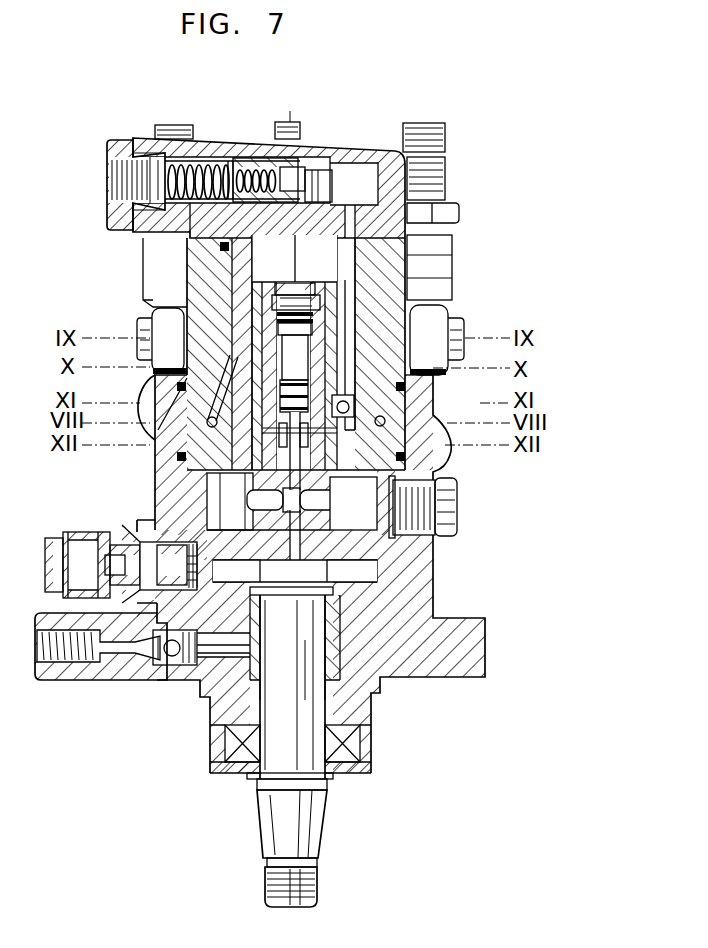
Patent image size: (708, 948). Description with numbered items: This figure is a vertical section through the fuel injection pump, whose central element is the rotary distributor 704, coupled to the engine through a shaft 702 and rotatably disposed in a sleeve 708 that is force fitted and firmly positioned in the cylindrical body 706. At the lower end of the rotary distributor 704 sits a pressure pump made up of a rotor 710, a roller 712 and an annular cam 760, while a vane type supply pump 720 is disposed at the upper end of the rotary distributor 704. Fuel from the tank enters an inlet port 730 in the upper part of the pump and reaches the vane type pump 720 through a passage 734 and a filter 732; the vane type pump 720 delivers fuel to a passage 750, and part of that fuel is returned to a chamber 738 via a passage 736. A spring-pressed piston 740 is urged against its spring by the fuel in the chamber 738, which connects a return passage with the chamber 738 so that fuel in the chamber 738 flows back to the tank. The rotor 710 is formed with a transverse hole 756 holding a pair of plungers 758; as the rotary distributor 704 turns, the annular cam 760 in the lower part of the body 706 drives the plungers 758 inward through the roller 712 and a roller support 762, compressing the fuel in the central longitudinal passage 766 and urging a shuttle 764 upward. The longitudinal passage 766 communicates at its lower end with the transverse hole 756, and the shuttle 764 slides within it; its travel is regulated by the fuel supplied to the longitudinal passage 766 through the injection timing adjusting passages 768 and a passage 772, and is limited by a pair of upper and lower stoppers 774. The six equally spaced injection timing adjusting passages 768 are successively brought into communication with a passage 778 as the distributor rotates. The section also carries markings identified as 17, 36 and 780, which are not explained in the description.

The shaft 702 is at (310, 812).
The rotary distributor 704 is at (275, 453).
The cylindrical body 706 is at (187, 294).
The sleeve 708 is at (240, 300).
The rotor 710 is at (213, 521).
The roller 712 is at (208, 486).
The housing 17 is at (153, 270).
The pin 36 is at (215, 395).
The vane type supply pump 720 is at (440, 278).
The inlet port 730 is at (108, 176).
The filter 732 is at (110, 214).
The passage 734 is at (240, 225).
The passage 736 is at (447, 238).
The chamber 738 is at (367, 178).
The piston 740 is at (292, 176).
The passage 750 is at (446, 303).
The transverse hole 756 is at (357, 512).
The plungers 758 is at (307, 512).
The annular cam 760 is at (450, 492).
The roller support 762 is at (432, 544).
The shuttle 764 is at (312, 395).
The longitudinal passage 766 is at (207, 480).
The injection timing adjusting passages 768 is at (433, 482).
The passage 772 is at (430, 406).
The upper and lower stoppers 774 is at (305, 355).
The passage 778 is at (386, 421).
The check ball 780 is at (348, 404).